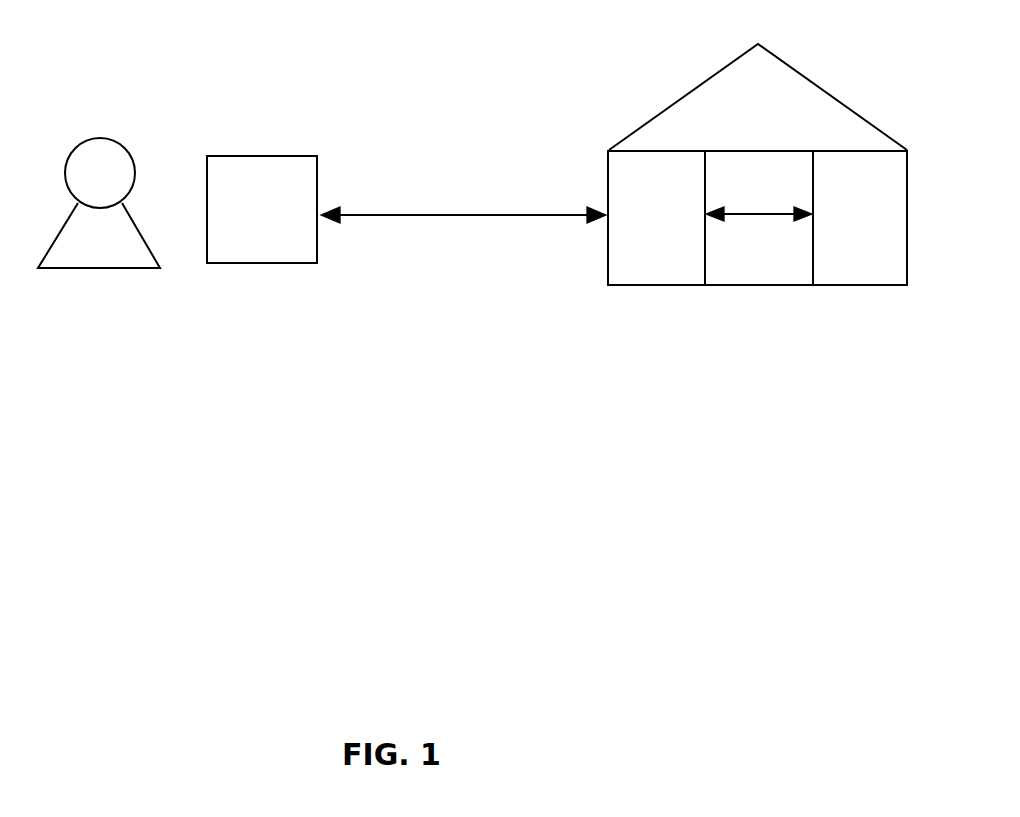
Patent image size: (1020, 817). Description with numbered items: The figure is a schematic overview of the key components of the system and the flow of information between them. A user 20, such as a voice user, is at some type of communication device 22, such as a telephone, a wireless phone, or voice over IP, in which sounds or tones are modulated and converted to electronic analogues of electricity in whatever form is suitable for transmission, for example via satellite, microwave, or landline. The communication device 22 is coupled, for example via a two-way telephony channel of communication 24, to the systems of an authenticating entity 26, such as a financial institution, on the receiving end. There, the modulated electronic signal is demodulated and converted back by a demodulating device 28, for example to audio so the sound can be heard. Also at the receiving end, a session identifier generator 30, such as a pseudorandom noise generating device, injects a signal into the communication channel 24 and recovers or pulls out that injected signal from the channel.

The user 20 is at (77, 271).
The communication device 22 is at (240, 264).
The two-way telephony channel of communication 24 is at (445, 213).
The authenticating entity 26 is at (695, 88).
The demodulating device 28 is at (662, 287).
The session identifier generator 30 is at (840, 287).